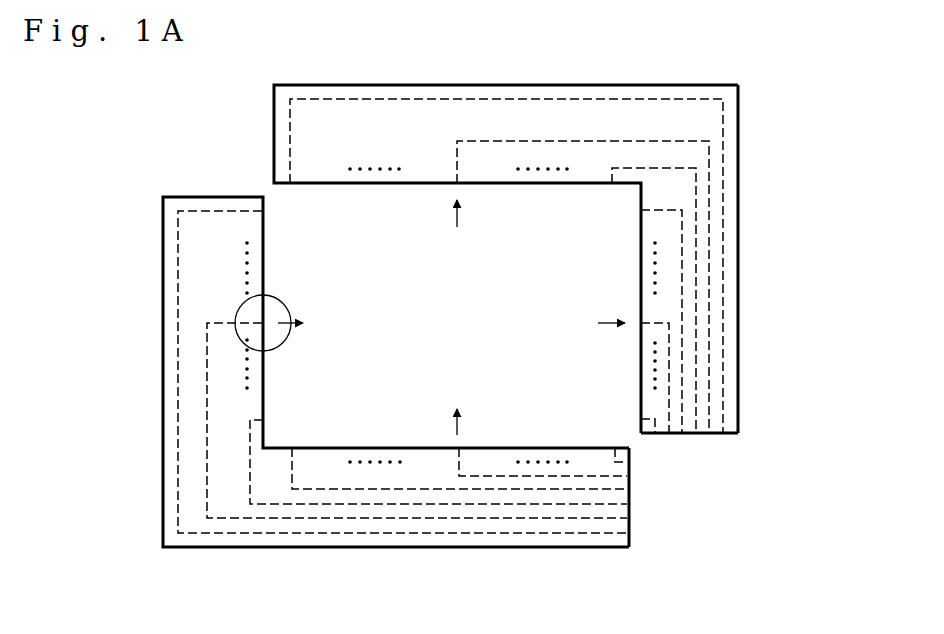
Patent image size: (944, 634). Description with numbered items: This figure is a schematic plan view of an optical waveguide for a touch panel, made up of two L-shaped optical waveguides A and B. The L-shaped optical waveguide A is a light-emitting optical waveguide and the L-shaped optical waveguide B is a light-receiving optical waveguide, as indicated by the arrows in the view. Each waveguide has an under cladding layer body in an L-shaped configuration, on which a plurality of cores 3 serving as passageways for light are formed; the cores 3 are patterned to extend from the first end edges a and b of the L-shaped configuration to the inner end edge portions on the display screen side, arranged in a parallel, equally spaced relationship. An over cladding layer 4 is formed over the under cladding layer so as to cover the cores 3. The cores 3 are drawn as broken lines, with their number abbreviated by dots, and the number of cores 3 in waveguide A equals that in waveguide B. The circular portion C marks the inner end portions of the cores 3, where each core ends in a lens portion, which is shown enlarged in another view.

The L-shaped optical waveguide A is at (210, 195).
The L-shaped optical waveguide B is at (273, 138).
The circular portion C is at (242, 306).
The cores 3 is at (667, 168).
The over cladding layer 4 is at (731, 193).
The first end edge a is at (629, 507).
The first end edge b is at (700, 433).